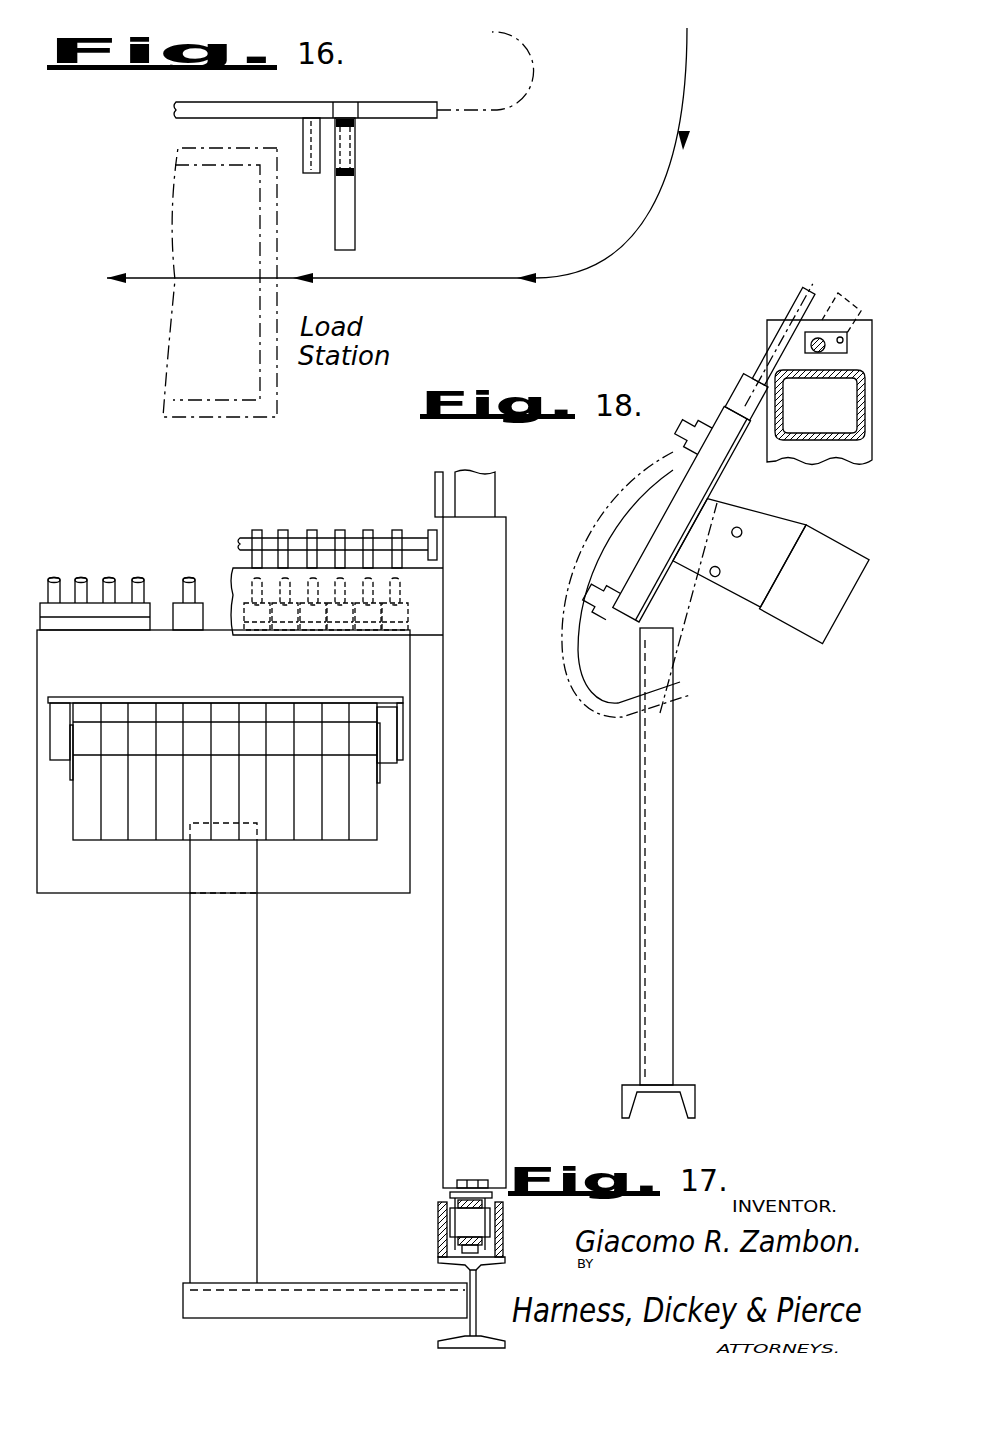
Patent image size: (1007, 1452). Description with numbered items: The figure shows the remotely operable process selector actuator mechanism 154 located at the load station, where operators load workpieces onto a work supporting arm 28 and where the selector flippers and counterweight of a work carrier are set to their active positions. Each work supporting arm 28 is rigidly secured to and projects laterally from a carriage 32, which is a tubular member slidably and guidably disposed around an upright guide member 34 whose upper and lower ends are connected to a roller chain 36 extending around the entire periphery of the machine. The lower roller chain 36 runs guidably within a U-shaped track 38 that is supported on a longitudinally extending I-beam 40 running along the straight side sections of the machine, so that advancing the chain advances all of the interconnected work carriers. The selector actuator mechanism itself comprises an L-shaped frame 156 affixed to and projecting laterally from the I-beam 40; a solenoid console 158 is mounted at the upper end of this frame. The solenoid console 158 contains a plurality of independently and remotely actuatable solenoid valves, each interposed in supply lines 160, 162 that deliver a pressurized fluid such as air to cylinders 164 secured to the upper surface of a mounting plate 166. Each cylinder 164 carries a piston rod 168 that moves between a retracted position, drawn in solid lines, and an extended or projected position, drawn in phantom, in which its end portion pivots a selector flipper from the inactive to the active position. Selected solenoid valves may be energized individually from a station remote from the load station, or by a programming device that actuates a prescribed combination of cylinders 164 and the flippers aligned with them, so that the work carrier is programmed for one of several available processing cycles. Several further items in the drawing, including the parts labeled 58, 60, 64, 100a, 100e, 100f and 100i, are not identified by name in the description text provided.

In FIG. 16, the work supporting arm 28 is at (347, 200).
In FIG. 17, the work supporting arm 28 is at (427, 585).
In FIG. 18, the work supporting arm 28 is at (827, 441).
In FIG. 17, the carriage 32 is at (488, 763).
In FIG. 18, the carriage 32 is at (768, 327).
In FIG. 17, the upright guide member 34 is at (485, 482).
In FIG. 17, the roller chain 36 is at (458, 1220).
In FIG. 17, the U-shaped track 38 is at (440, 1240).
In FIG. 17, the I-beam 40 is at (473, 1302).
In FIG. 17, the nut 58 is at (452, 1194).
In FIG. 18, the clamp plate 60 is at (818, 338).
In FIG. 17, the mounting plate 64 is at (433, 487).
In FIG. 17, the workpiece 100a is at (396, 529).
In FIG. 17, the workpiece 100e is at (283, 529).
In FIG. 17, the workpiece 100f is at (256, 540).
In FIG. 18, the workpiece 100i is at (765, 352).
In FIG. 16, the process selector actuator mechanism 154 is at (300, 137).
In FIG. 17, the process selector actuator mechanism 154 is at (118, 899).
In FIG. 18, the process selector actuator mechanism 154 is at (744, 612).
In FIG. 17, the L-shaped frame 156 is at (198, 1092).
In FIG. 18, the L-shaped frame 156 is at (667, 970).
In FIG. 17, the solenoid console 158 is at (313, 832).
In FIG. 18, the solenoid console 158 is at (817, 633).
In FIG. 18, the supply line 160 is at (675, 447).
In FIG. 18, the supply line 162 is at (600, 627).
In FIG. 17, the cylinder 164 is at (85, 631).
In FIG. 18, the cylinder 164 is at (699, 504).
In FIG. 17, the mounting plate 166 is at (400, 660).
In FIG. 18, the mounting plate 166 is at (720, 475).
In FIG. 17, the piston rod 168 is at (78, 578).
In FIG. 18, the piston rod 168 is at (805, 302).